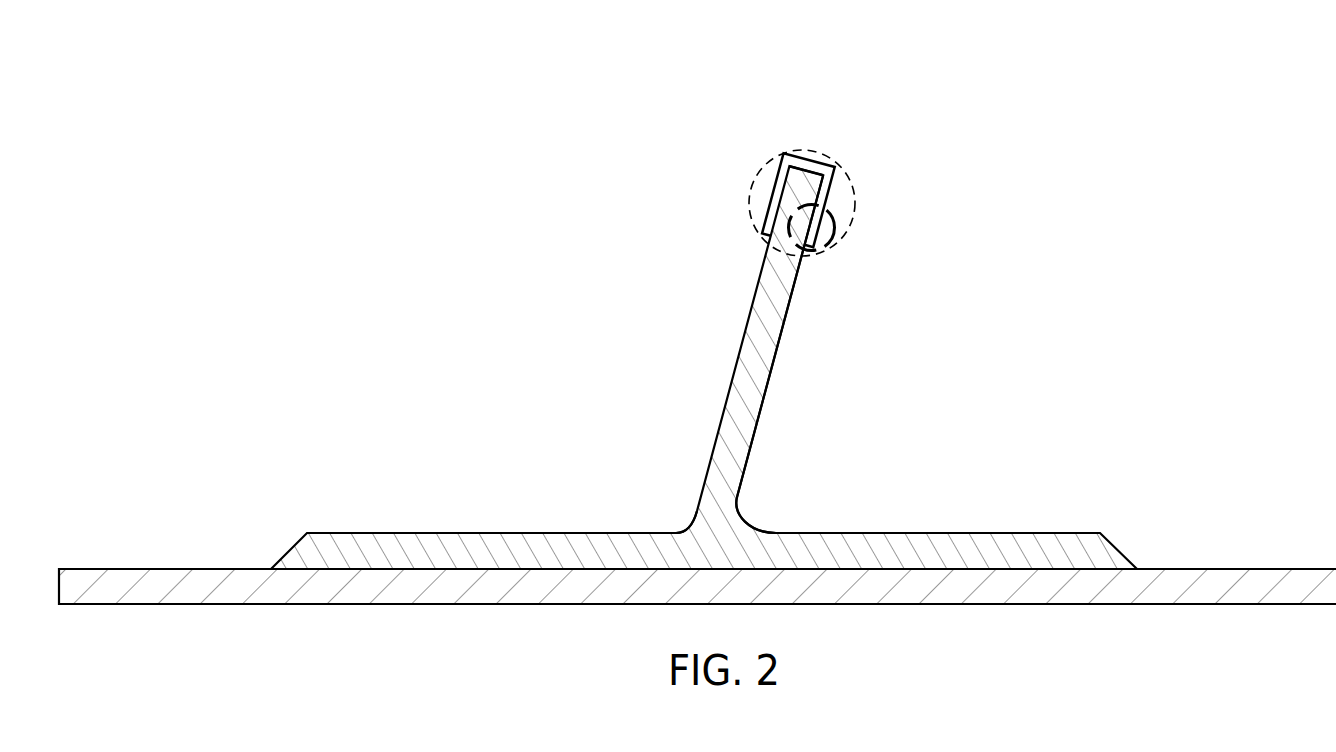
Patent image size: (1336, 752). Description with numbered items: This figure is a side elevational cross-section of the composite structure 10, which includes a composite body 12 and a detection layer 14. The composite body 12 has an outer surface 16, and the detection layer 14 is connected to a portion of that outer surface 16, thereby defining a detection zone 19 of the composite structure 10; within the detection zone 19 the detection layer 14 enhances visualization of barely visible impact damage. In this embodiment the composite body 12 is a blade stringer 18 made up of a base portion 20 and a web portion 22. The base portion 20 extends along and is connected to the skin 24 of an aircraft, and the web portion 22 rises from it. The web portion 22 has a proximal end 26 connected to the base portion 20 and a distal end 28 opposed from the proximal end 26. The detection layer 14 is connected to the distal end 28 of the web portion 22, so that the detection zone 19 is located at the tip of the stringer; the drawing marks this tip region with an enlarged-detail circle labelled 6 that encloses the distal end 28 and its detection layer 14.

The detail view region 6 is at (836, 229).
The composite structure 10 is at (697, 320).
The composite body 12 is at (770, 311).
The detection layer 14 is at (773, 202).
The outer surface 16 is at (767, 392).
The blade stringer 18 is at (898, 340).
The detection zone 19 is at (833, 158).
The base portion 20 is at (962, 543).
The web portion 22 is at (742, 448).
The skin 24 is at (1248, 578).
The proximal end 26 is at (654, 476).
The distal end 28 is at (767, 142).